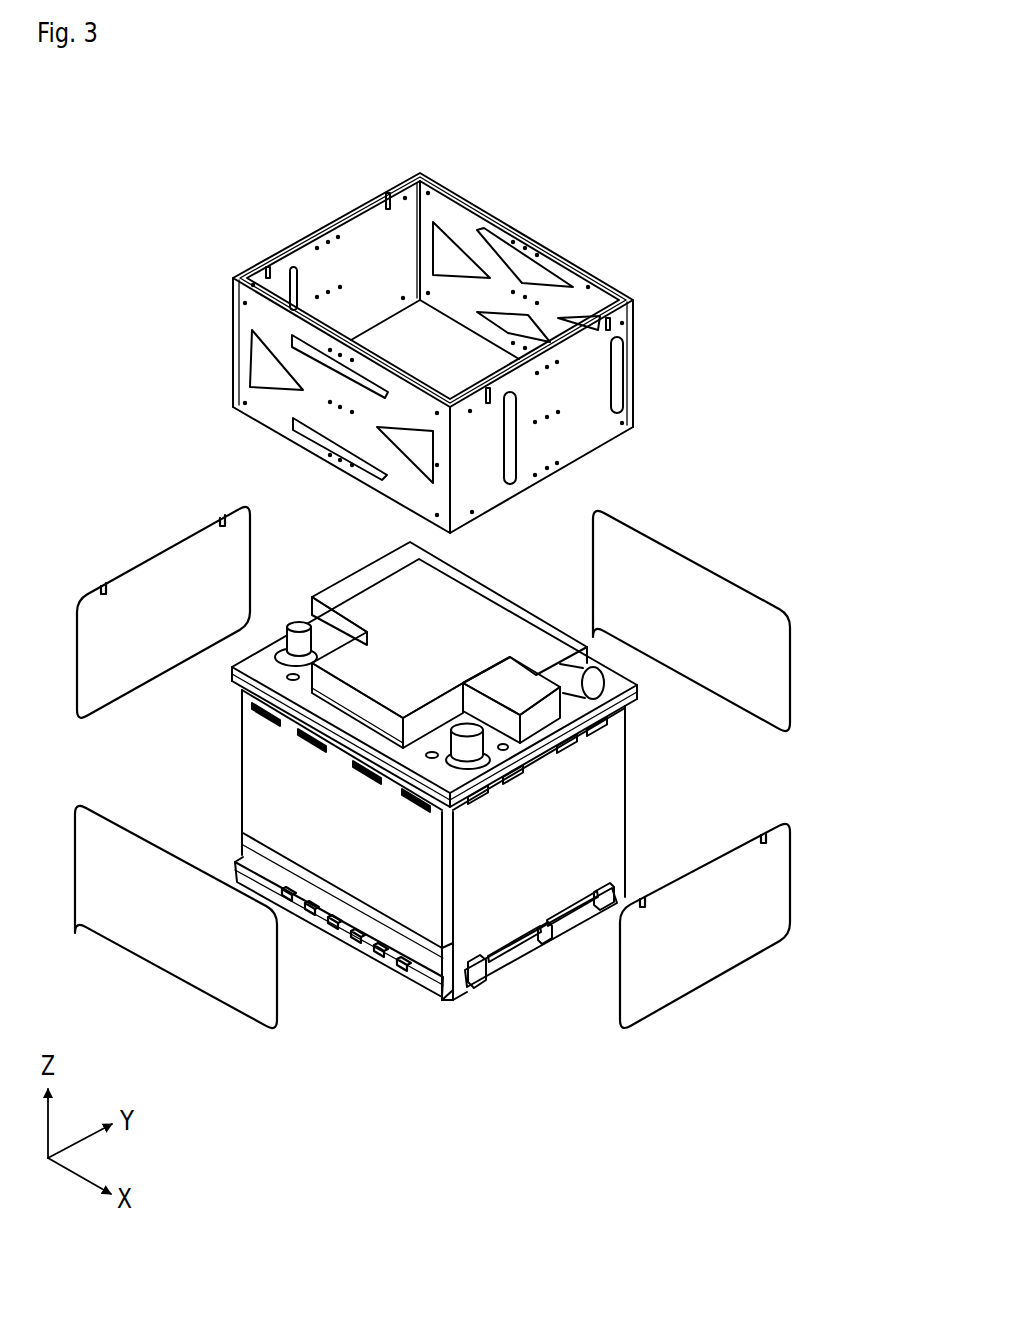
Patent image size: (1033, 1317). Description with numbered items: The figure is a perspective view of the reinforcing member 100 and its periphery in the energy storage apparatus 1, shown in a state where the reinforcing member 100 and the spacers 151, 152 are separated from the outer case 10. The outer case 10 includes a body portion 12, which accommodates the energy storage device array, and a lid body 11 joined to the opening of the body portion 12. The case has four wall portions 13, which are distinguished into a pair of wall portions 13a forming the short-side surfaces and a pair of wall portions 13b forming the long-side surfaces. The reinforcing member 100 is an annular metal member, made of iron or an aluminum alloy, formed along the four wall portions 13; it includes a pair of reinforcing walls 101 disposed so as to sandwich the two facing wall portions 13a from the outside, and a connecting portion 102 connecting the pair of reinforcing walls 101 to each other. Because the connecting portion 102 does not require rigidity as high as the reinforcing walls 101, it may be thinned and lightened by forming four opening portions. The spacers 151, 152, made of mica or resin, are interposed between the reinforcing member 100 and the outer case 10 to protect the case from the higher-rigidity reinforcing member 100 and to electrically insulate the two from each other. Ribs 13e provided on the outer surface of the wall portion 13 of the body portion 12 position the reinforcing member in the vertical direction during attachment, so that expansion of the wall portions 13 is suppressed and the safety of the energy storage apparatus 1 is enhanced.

The energy storage apparatus 1 is at (645, 168).
The outer case 10 is at (722, 728).
The lid body 11 is at (638, 700).
The body portion 12 is at (628, 815).
The wall portion 13 is at (240, 770).
The wall portion forming short-side surface 13a is at (498, 913).
The wall portion forming long-side surface 13b is at (402, 895).
The rib 13e is at (253, 710).
The reinforcing member 100 is at (495, 175).
The reinforcing wall 101 is at (323, 222).
The connecting portion 102 is at (540, 240).
The spacer 151 is at (130, 567).
The spacer 152 is at (713, 567).